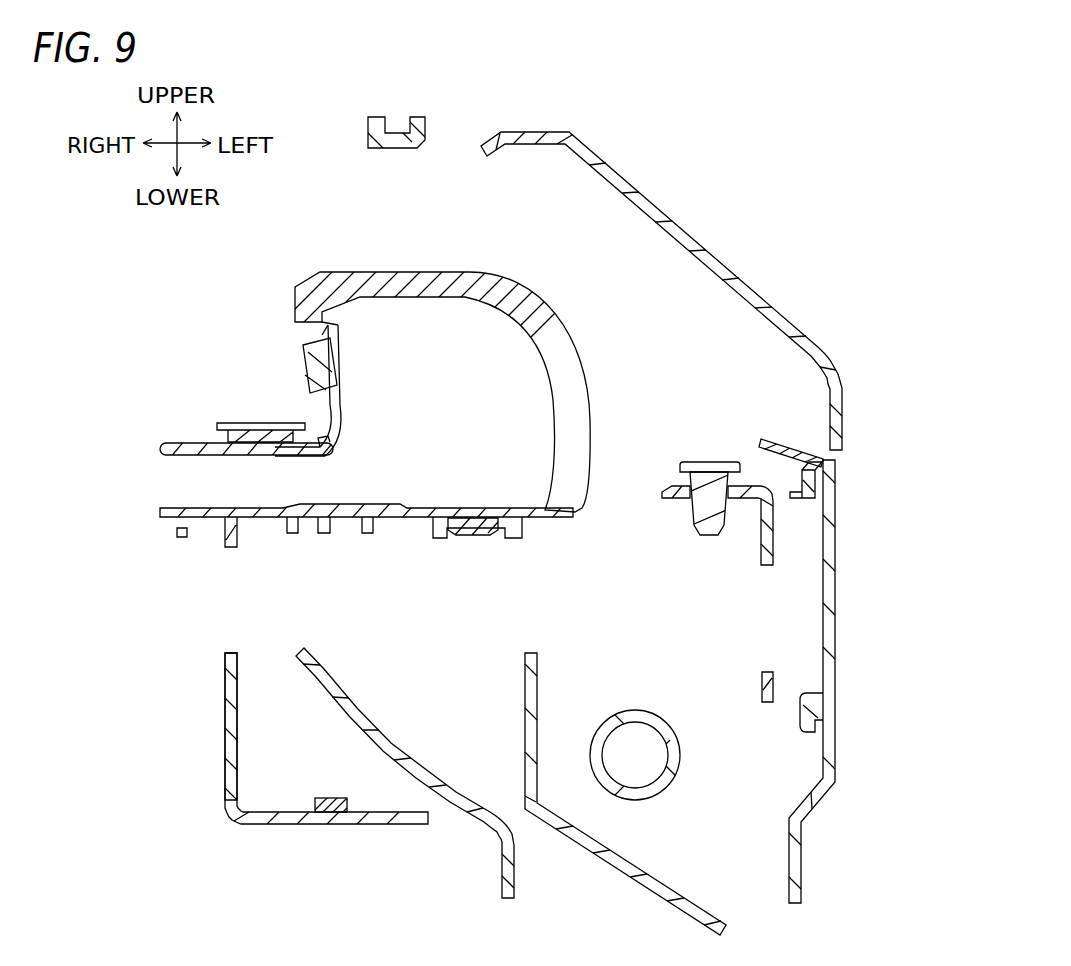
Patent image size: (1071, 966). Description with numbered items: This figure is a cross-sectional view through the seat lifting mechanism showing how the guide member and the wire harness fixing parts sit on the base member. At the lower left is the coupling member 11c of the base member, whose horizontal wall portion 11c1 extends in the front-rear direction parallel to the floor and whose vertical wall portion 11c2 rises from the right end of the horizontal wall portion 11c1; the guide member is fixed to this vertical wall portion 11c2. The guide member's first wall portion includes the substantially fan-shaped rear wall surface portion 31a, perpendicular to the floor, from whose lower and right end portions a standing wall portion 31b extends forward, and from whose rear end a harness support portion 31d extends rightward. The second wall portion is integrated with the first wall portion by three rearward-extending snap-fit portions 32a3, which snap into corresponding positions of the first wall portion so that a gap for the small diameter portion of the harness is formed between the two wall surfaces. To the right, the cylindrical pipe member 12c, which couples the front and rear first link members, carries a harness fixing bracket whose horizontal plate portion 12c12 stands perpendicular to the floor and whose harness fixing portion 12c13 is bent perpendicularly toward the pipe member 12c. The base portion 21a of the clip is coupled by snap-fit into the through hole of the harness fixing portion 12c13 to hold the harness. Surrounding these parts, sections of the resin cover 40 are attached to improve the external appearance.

The cover 40 is at (700, 240).
The rear wall surface portion 31a is at (562, 350).
The standing wall portion 31b is at (335, 430).
The harness support portion 31d is at (188, 444).
The snap-fit portions 32a3 is at (305, 362).
The base portion 21a is at (712, 462).
The horizontal plate portion 12c12 is at (775, 535).
The harness fixing portion 12c13 is at (668, 500).
The pipe member 12c is at (680, 757).
The coupling member 11c is at (280, 777).
The vertical wall portion 11c2 is at (225, 720).
The horizontal wall portion 11c1 is at (310, 824).